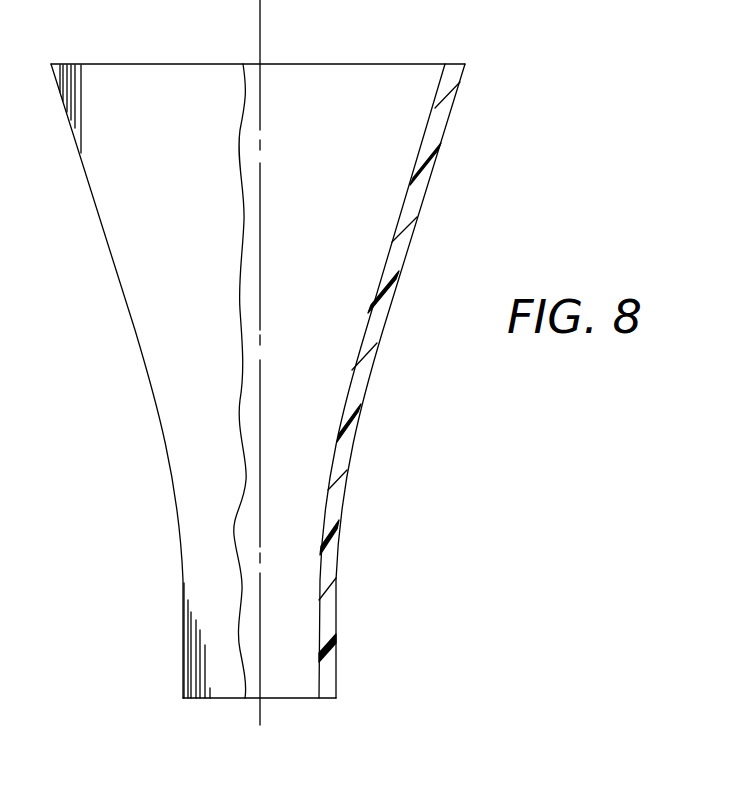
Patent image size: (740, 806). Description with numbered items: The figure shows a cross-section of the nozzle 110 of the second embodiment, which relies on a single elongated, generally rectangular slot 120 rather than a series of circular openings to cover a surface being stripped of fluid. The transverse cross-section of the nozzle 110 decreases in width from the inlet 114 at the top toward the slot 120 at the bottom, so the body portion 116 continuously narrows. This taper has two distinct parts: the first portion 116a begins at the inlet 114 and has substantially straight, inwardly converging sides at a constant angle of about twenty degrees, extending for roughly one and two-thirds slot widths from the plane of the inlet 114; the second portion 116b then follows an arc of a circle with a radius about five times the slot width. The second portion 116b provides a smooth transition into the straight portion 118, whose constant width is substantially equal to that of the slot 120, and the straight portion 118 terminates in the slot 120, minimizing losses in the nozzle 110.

The nozzle 110 is at (507, 40).
The inlet 114 is at (337, 78).
The body portion 116 is at (141, 320).
The first portion 116a is at (389, 324).
The second portion 116b is at (397, 323).
The straight portion 118 is at (191, 603).
The slot 120 is at (291, 694).